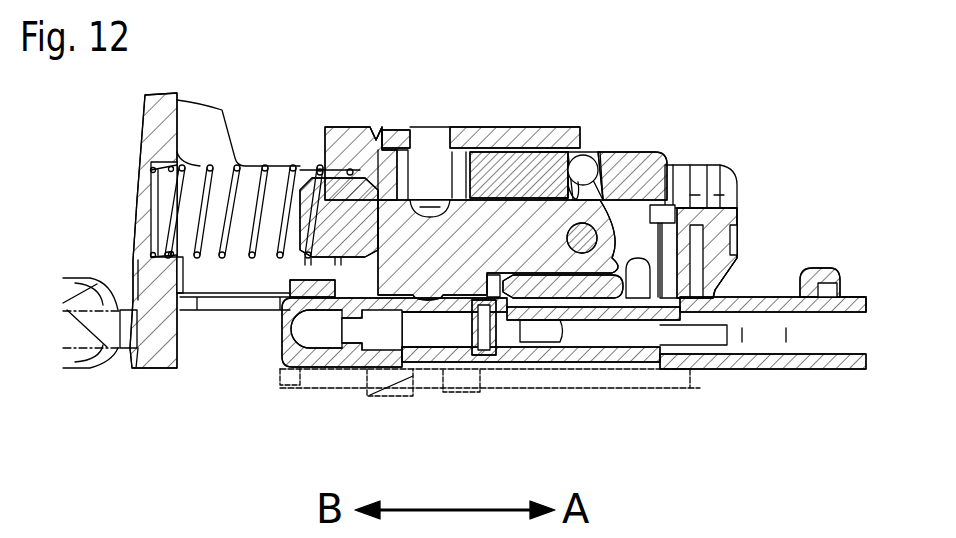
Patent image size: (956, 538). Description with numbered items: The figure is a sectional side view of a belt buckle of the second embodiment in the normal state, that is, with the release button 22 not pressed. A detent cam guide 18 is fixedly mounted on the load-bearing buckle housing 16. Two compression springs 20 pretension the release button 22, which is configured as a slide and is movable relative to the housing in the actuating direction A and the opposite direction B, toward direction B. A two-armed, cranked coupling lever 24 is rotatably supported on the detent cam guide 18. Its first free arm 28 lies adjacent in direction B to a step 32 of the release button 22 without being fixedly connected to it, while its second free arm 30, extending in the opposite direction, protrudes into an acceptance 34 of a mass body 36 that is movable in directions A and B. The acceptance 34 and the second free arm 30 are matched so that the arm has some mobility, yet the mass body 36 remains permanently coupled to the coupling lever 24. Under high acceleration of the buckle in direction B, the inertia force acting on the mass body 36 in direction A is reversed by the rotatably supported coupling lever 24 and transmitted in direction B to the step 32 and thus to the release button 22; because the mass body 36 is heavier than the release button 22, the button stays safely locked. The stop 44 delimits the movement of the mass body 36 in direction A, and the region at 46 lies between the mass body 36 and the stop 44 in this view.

The buckle housing 16 is at (282, 338).
The detent cam guide 18 is at (470, 135).
The compression springs 20 is at (262, 195).
The release button 22 is at (138, 215).
The coupling lever 24 is at (560, 155).
The first free arm 28 is at (638, 282).
The second free arm 30 is at (605, 150).
The step 32 is at (590, 285).
The acceptance 34 is at (584, 165).
The mass body 36 is at (323, 127).
The stop 44 is at (385, 138).
The gap 46 is at (375, 138).